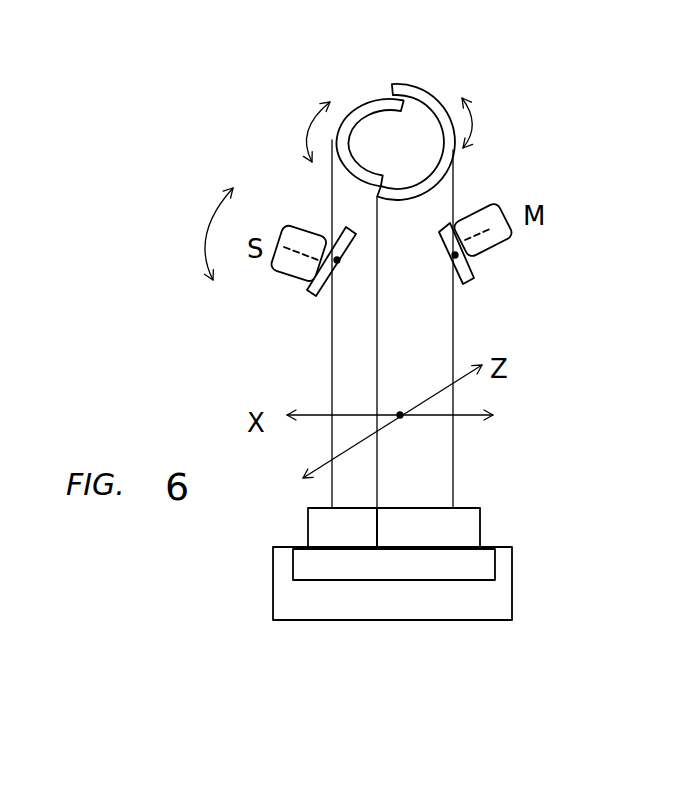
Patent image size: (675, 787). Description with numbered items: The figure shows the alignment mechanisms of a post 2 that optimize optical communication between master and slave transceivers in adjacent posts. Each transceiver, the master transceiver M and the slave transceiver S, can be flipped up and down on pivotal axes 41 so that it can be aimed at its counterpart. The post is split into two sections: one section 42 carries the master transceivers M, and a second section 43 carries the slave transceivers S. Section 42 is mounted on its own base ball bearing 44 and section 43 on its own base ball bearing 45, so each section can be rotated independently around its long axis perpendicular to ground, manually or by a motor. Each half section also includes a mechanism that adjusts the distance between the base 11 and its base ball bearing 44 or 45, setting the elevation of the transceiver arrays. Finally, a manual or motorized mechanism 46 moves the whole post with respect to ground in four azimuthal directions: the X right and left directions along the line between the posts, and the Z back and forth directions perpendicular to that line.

The post 2 is at (387, 131).
The base 11 is at (392, 583).
The pivotal axes 41 is at (341, 263).
The section 42 is at (423, 85).
The second section 43 is at (358, 103).
The base ball bearing 44 is at (428, 528).
The base ball bearing 45 is at (342, 528).
The manual or motorized mechanism 46 is at (394, 565).